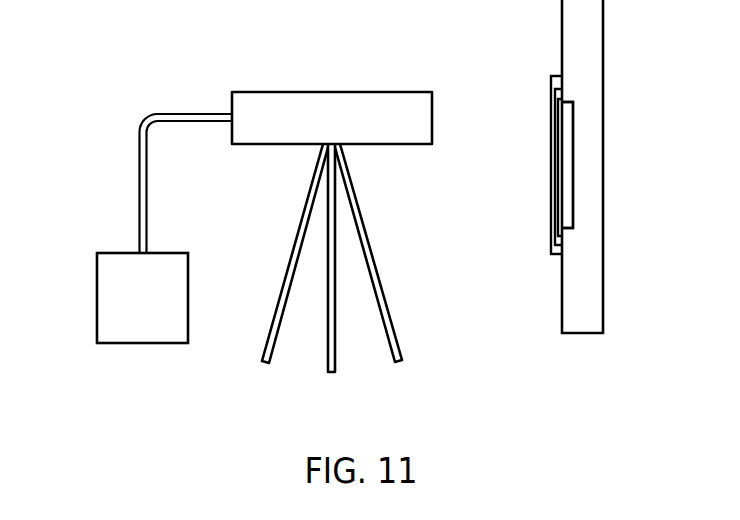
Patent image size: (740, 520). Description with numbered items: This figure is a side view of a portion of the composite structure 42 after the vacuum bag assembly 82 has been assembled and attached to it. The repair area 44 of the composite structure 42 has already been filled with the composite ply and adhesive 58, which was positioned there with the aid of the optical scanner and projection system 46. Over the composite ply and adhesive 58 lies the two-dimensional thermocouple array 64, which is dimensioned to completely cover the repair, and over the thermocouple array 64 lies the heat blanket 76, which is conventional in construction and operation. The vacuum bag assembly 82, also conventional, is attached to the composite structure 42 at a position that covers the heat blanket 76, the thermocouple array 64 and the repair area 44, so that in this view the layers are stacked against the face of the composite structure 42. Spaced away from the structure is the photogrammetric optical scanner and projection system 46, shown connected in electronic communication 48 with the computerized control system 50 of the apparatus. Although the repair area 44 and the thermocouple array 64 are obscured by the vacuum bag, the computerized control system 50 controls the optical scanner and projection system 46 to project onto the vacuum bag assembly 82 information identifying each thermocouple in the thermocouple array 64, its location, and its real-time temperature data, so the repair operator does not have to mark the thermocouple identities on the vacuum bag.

The composite structure 42 is at (560, 51).
The repair area 44 is at (573, 147).
The photogrammetric optical scanner and projection system 46 is at (362, 92).
The electronic communication 48 is at (176, 113).
The computerized control system 50 is at (115, 253).
The composite ply and adhesive 58 is at (562, 213).
The thermocouple array 64 is at (560, 179).
The heat blanket 76 is at (554, 113).
The vacuum bag assembly 82 is at (551, 83).